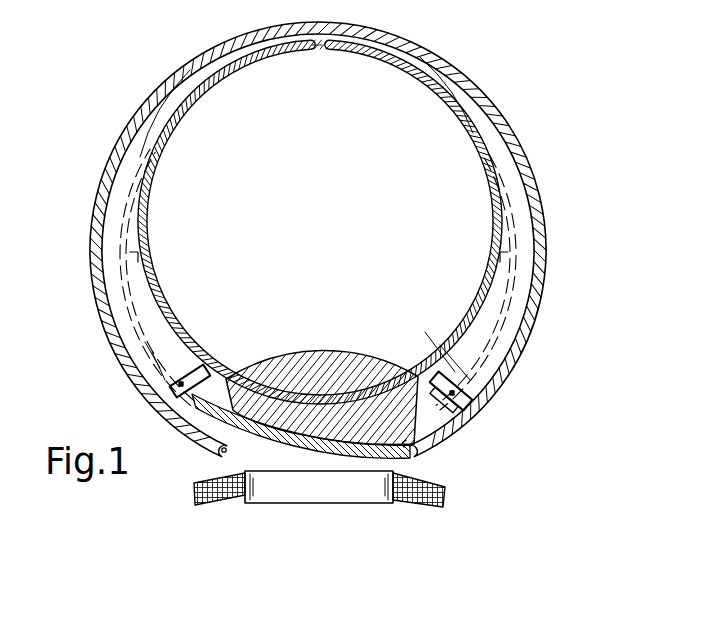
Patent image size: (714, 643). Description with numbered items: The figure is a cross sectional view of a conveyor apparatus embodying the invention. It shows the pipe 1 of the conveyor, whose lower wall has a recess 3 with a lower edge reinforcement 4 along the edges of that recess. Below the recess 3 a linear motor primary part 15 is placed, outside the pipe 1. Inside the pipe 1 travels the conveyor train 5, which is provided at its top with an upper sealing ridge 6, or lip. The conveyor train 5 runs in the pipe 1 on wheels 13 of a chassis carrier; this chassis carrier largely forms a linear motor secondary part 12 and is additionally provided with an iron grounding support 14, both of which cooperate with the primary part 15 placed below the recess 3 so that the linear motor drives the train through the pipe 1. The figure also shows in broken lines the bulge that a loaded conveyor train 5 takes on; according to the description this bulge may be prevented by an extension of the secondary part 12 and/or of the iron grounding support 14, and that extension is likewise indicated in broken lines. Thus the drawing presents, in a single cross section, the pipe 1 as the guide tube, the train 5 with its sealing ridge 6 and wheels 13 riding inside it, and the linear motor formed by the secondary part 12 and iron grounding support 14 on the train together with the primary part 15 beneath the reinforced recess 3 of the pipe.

The pipe 1 is at (527, 180).
The recess 3 is at (387, 455).
The lower edge reinforcement 4 is at (225, 448).
The conveyor train 5 is at (500, 246).
The upper sealing ridge 6 is at (352, 42).
The linear motor secondary part 12 is at (452, 437).
The wheels 13 is at (183, 393).
The iron grounding support 14 is at (460, 415).
The linear motor primary part 15 is at (367, 488).